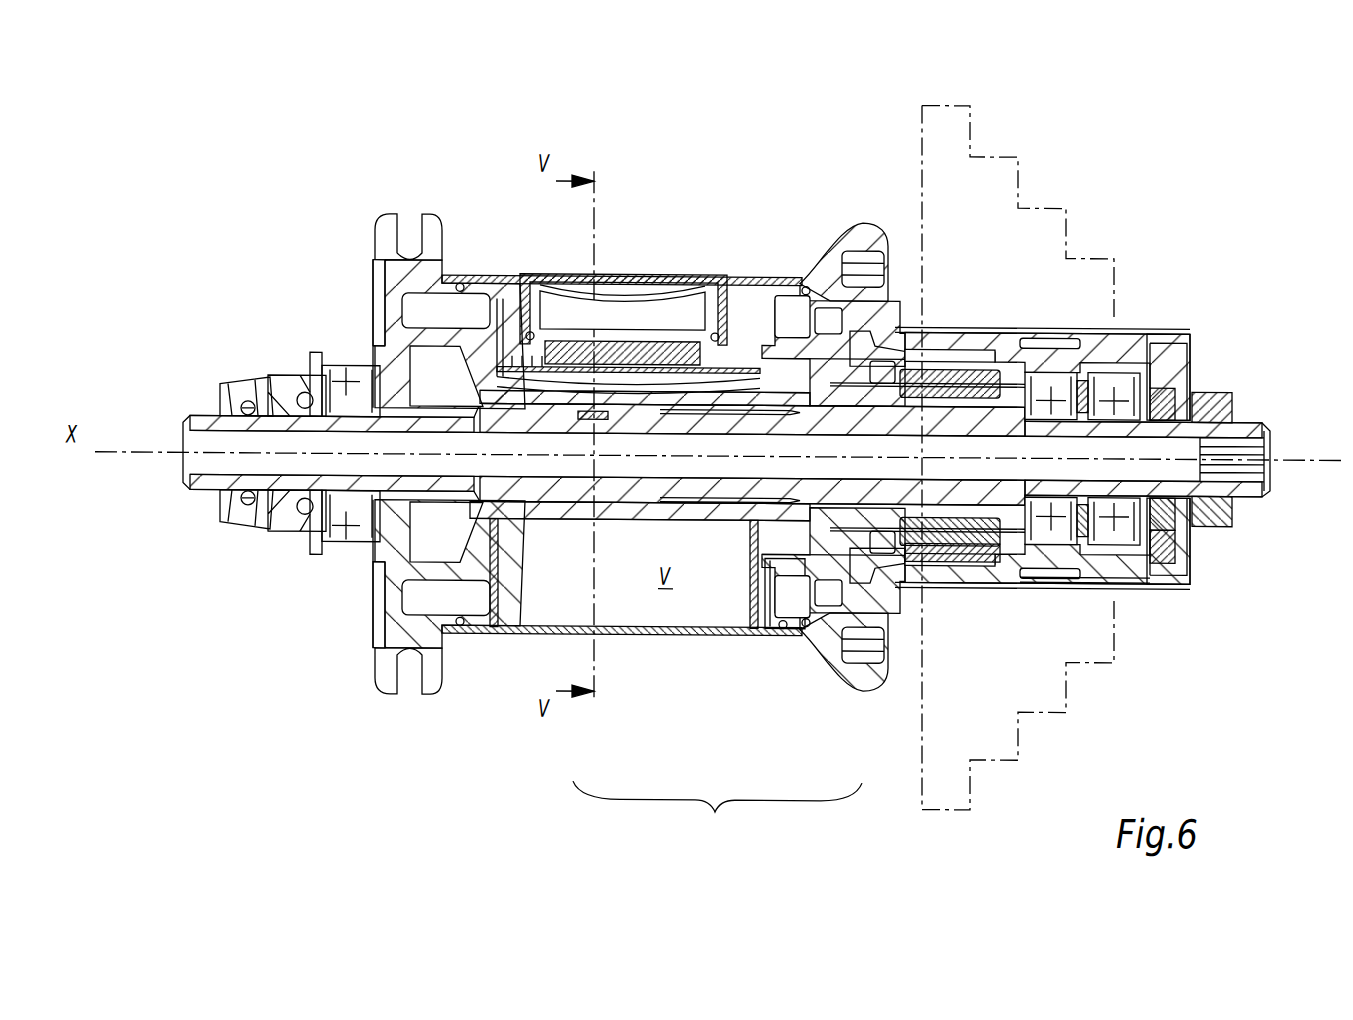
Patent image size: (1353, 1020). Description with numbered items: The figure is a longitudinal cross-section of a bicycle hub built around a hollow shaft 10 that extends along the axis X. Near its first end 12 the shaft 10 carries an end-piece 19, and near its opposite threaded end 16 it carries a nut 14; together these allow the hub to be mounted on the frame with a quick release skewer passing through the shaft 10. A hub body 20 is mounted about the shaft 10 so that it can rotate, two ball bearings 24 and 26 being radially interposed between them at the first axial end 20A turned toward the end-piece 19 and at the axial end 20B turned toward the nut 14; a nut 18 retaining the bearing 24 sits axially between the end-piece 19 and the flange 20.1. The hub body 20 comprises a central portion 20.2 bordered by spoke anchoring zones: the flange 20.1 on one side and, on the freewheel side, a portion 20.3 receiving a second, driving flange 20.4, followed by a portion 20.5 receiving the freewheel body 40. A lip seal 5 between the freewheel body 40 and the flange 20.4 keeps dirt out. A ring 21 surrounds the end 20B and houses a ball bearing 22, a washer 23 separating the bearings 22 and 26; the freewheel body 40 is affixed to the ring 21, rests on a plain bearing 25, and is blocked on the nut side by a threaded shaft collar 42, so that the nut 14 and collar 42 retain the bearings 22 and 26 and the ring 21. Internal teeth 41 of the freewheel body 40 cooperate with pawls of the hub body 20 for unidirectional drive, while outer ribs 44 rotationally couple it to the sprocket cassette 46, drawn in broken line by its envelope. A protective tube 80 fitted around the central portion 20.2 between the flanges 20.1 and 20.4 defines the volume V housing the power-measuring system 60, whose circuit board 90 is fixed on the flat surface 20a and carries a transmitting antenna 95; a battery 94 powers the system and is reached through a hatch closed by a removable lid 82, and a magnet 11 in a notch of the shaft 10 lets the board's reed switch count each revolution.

The lip seal 5 is at (822, 312).
The hollow shaft 10 is at (473, 494).
The magnet 11 is at (600, 428).
The first end 12 is at (215, 420).
The nut 14 is at (1212, 387).
The second threaded end 16 is at (1255, 484).
The nut 18 is at (287, 383).
The end-piece 19 is at (232, 389).
The hub body 20 is at (717, 815).
The flange 20.1 is at (437, 682).
The central portion 20.2 is at (705, 525).
The portion for receiving a second flange 20.3 is at (790, 545).
The second flange 20.4 is at (823, 628).
The portion for receiving a freewheel body 20.5 is at (882, 582).
The first axial end 20A is at (332, 357).
The axial end 20B is at (1042, 398).
The flat surface 20a is at (557, 360).
The ring 21 is at (1097, 351).
The ball bearing 22 is at (1152, 341).
The washer 23 is at (1127, 390).
The ball bearing 24 is at (345, 382).
The plain bearing 25 is at (888, 311).
The ball bearing 26 is at (1057, 388).
The freewheel body 40 is at (943, 578).
The internal teeth 41 is at (932, 355).
The shaft collar 42 is at (1162, 528).
The outer ribs 44 is at (1080, 587).
The sprocket cassette 46 is at (924, 141).
The power-measuring system 60 is at (617, 318).
The protective tube 80 is at (496, 281).
The removable lid 82 is at (716, 333).
The circuit board 90 is at (500, 368).
The battery 94 is at (662, 347).
The transmitting antenna 95 is at (538, 357).